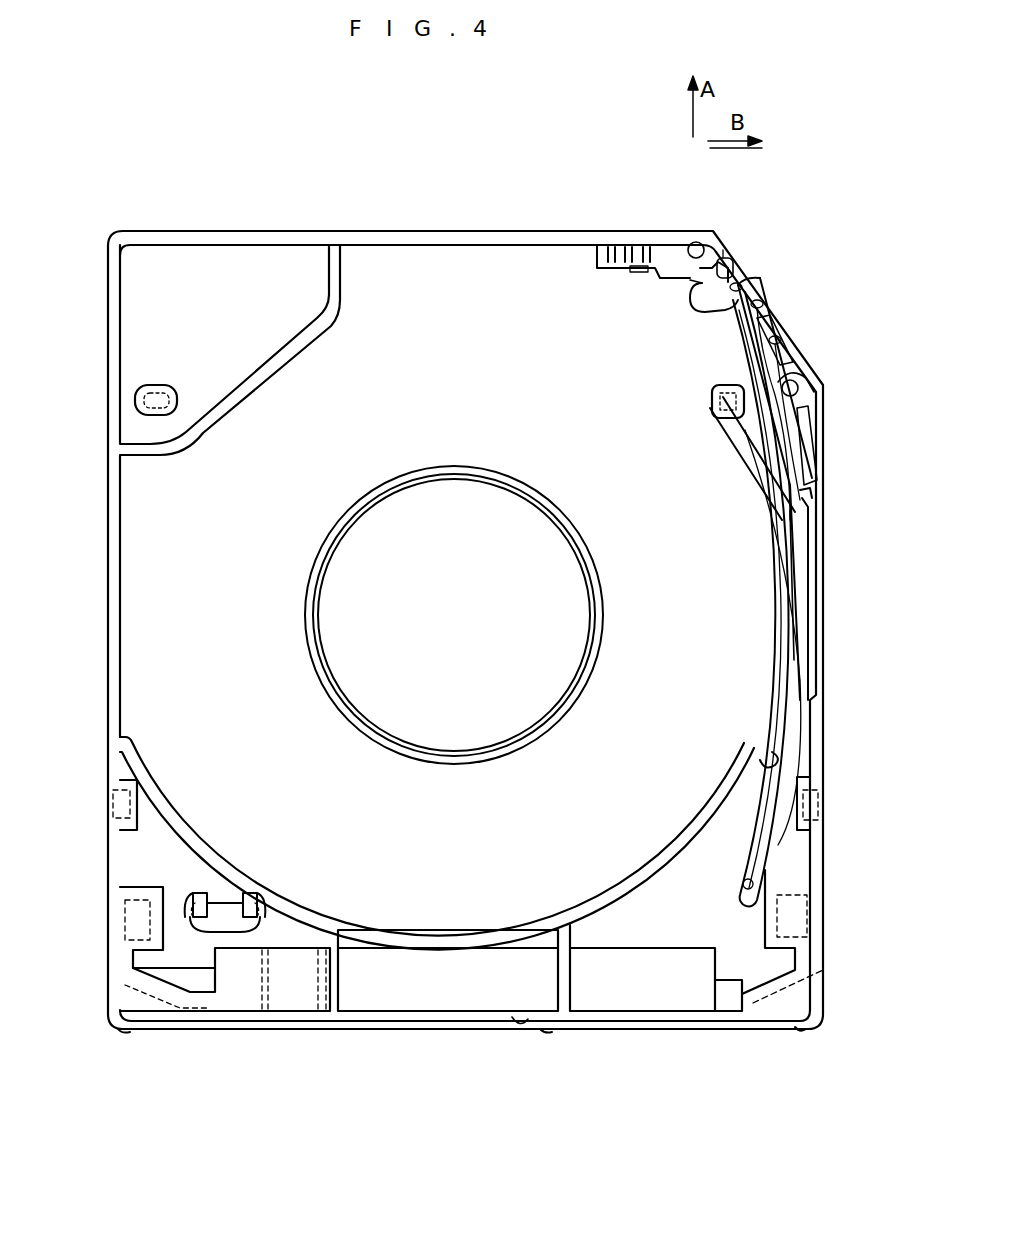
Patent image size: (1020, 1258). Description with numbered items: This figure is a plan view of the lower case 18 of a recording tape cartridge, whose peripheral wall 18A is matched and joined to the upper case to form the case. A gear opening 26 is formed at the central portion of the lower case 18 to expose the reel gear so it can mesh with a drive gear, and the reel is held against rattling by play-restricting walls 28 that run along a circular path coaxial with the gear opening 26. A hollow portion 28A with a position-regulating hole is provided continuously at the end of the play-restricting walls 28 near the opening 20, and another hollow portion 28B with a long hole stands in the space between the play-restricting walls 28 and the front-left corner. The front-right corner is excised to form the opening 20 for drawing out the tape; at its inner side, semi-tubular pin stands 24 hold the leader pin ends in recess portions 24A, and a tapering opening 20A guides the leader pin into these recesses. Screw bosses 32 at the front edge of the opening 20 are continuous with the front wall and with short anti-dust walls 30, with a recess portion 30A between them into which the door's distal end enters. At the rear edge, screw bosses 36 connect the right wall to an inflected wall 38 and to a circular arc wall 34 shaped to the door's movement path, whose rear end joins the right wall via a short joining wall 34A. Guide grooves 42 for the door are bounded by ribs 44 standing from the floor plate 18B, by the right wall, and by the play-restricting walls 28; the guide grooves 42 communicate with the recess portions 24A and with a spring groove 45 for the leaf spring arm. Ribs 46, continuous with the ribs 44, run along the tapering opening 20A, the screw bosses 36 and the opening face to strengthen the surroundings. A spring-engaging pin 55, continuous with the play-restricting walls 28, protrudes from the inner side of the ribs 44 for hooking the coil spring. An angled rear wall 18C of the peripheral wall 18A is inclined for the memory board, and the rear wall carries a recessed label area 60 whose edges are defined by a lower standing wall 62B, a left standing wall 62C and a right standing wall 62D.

The lower case 18 is at (517, 183).
The peripheral wall 18A is at (374, 231).
The floor plate 18B is at (450, 915).
The angled rear wall 18C is at (238, 1000).
The opening 20 is at (790, 352).
The tapering opening 20A is at (868, 335).
The pin stand 24 is at (712, 312).
The recess portion 24A is at (697, 290).
The gear opening 26 is at (466, 612).
The play-restricting wall 28 is at (752, 490).
The hollow portion 28A is at (712, 425).
The hollow portion 28B is at (161, 385).
The anti-dust wall 30 is at (728, 252).
The recess portion 30A is at (805, 246).
The screw boss 32 is at (695, 241).
The circular arc wall 34 is at (820, 448).
The joining wall 34A is at (790, 540).
The screw boss 36 is at (798, 392).
The inflected wall 38 is at (812, 420).
The guide groove 42 is at (757, 303).
The rib 44 is at (742, 282).
The spring groove 45 is at (672, 285).
The rib 46 is at (808, 376).
The spring-engaging pin 55 is at (765, 760).
The label area 60 is at (518, 1016).
The lower standing wall 62B is at (548, 1032).
The left standing wall 62C is at (128, 1032).
The right standing wall 62D is at (800, 1029).